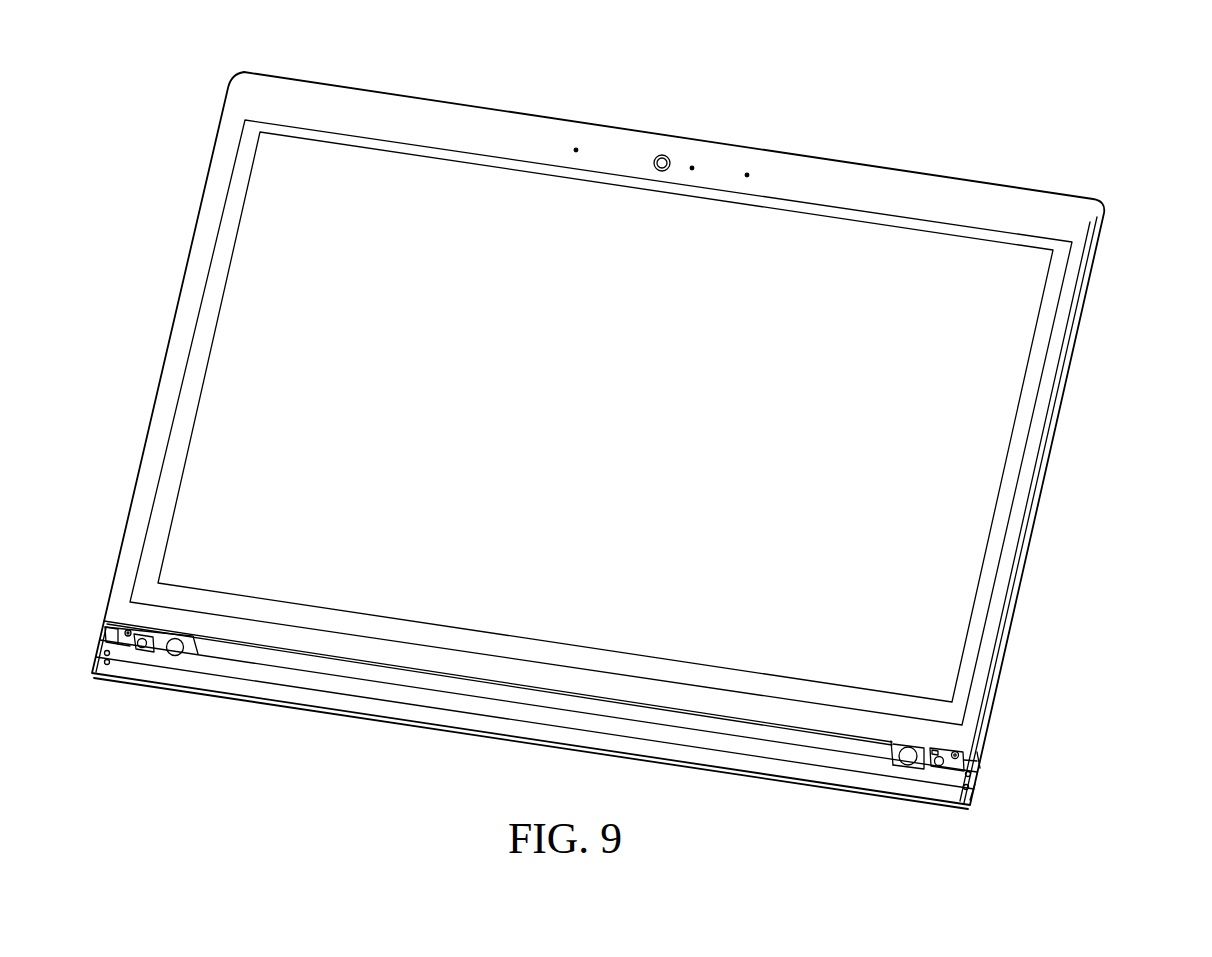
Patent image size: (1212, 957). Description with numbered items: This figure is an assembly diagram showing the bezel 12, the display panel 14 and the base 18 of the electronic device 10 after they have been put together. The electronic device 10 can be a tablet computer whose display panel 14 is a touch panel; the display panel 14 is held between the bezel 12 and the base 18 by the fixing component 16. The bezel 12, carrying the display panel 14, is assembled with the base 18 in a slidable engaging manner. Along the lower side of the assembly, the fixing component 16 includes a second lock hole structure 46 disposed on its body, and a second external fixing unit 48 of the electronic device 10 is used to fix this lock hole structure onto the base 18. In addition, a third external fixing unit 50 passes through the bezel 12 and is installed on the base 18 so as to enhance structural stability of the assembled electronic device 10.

The electronic device 10 is at (1093, 122).
The bezel 12 is at (905, 190).
The display panel 14 is at (812, 267).
The fixing component 16 is at (978, 763).
The base 18 is at (980, 790).
The second lock hole structure 46 is at (935, 772).
The second external fixing unit 48 is at (948, 750).
The third external fixing unit 50 is at (906, 747).